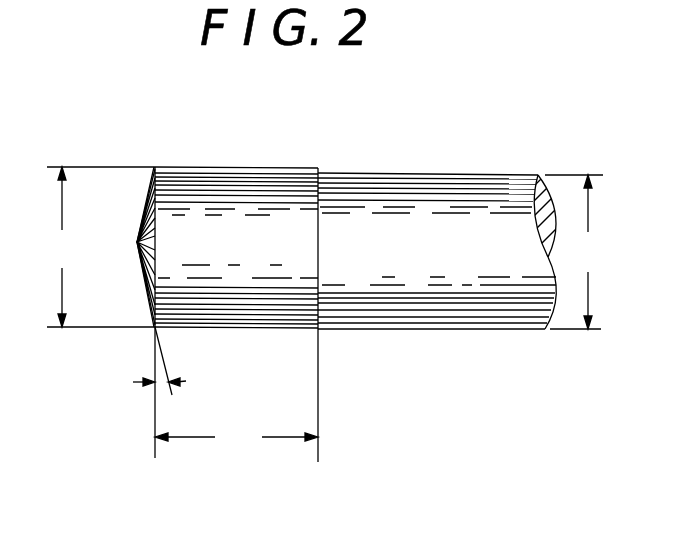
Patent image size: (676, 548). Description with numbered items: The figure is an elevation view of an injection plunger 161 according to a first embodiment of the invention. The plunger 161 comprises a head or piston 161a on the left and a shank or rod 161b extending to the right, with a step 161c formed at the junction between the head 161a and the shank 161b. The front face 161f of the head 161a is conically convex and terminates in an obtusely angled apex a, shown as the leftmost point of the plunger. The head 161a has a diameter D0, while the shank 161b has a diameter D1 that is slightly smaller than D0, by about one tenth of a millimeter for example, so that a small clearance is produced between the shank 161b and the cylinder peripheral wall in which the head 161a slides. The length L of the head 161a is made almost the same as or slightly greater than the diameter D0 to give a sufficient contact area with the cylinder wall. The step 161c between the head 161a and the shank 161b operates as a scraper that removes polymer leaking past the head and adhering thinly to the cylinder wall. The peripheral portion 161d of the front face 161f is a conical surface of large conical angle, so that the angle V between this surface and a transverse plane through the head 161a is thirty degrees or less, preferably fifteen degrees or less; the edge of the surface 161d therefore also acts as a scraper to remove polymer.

The injection plunger 161 is at (331, 275).
The head 161a is at (253, 170).
The shank 161b is at (418, 175).
The step 161c is at (320, 172).
The peripheral portion 161d is at (113, 281).
The front face 161f is at (143, 280).
The apex a is at (137, 242).
The head diameter D0 is at (101, 247).
The shank diameter D1 is at (575, 252).
The length of the head L is at (236, 439).
The angle V is at (166, 361).